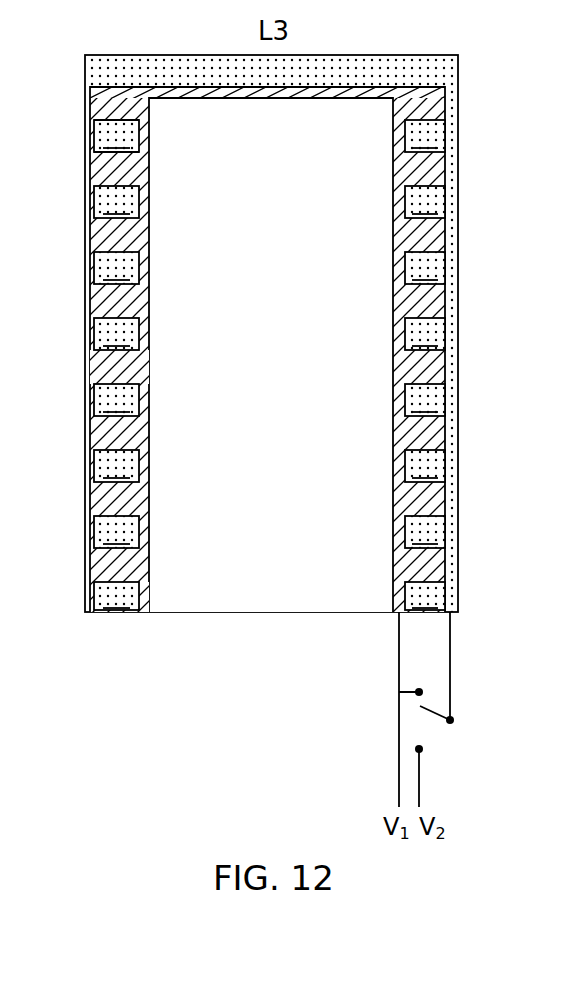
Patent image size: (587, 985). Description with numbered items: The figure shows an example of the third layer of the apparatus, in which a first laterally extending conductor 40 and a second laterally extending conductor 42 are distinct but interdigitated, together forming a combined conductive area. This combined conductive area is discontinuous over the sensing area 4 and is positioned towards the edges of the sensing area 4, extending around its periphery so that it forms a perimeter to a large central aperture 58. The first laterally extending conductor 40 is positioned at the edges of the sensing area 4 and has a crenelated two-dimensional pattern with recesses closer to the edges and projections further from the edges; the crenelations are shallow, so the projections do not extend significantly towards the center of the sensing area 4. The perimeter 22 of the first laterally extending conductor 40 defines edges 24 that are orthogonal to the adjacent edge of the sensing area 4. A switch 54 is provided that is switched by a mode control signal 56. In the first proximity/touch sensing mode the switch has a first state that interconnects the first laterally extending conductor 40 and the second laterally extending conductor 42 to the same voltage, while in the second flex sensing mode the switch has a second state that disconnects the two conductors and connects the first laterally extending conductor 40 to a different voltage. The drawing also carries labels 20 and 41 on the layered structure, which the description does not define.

The sensing area 4 is at (279, 358).
The electrodes 20 is at (269, 365).
The perimeter 22 is at (141, 137).
The edges 24 is at (104, 120).
The first laterally extending conductor 40 is at (108, 614).
The hatched block 41 is at (120, 355).
The second laterally extending conductor 42 is at (140, 614).
The switch 54 is at (493, 687).
The mode control signal 56 is at (470, 720).
The central aperture 58 is at (288, 377).